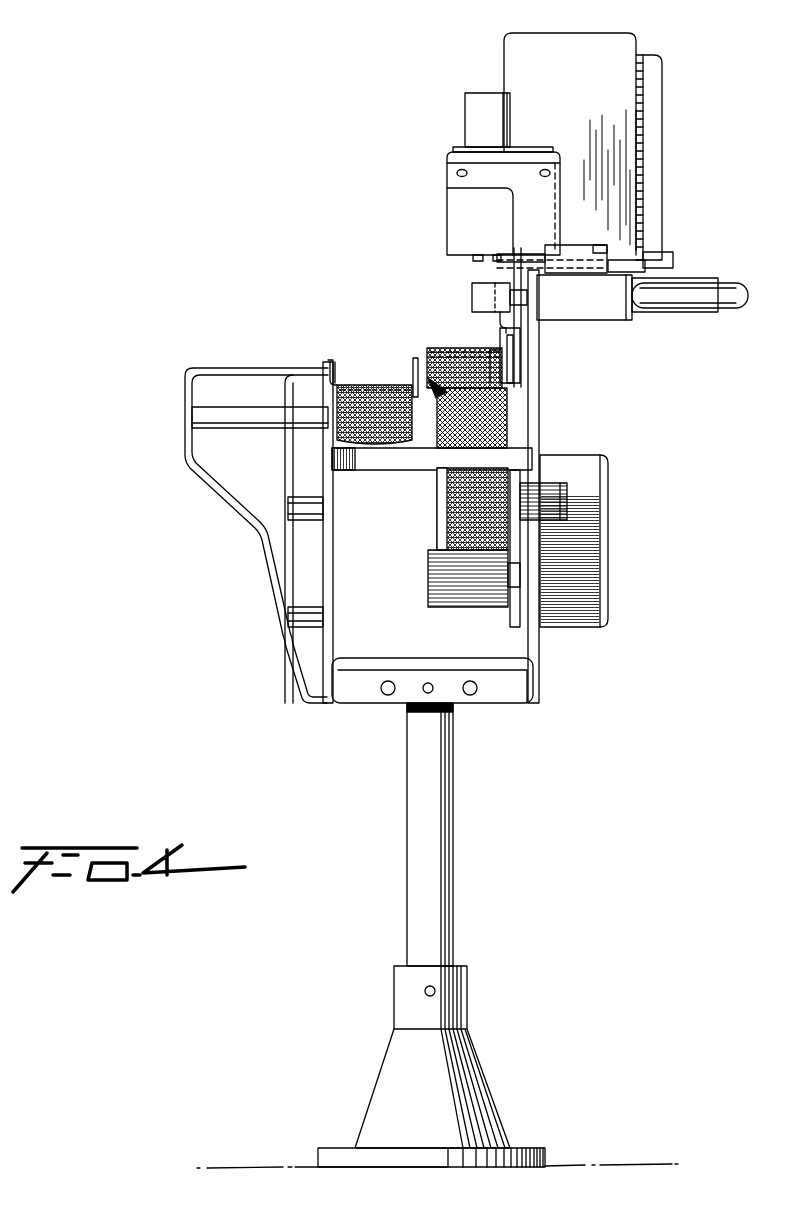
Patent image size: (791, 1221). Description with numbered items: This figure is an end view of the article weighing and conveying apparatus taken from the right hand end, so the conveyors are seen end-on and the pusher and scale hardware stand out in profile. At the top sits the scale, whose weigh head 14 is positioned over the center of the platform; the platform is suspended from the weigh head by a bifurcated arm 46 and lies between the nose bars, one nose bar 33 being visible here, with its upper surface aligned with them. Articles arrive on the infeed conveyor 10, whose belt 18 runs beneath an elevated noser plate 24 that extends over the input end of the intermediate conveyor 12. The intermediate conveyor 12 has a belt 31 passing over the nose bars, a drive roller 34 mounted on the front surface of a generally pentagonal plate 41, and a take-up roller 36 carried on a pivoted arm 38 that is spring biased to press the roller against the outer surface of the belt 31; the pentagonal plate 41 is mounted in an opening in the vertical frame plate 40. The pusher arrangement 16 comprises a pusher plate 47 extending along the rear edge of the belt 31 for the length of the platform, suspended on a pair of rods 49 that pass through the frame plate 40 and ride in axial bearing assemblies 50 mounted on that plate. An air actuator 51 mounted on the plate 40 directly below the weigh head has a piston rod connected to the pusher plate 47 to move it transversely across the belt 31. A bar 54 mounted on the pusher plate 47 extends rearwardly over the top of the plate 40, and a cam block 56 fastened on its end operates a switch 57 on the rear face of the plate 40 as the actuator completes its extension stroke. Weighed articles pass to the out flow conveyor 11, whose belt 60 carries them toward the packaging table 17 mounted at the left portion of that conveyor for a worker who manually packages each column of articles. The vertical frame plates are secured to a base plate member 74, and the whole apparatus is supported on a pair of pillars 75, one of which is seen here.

The infeed conveyor 10 is at (450, 346).
The out flow conveyor 11 is at (368, 380).
The intermediate conveyor 12 is at (417, 367).
The weigh head 14 is at (468, 111).
The pusher arrangement 16 is at (478, 281).
The packaging table 17 is at (188, 370).
The belt 18 is at (473, 350).
The noser plate 24 is at (425, 352).
The belt 31 is at (460, 470).
The nose bar 33 is at (522, 398).
The drive roller 34 is at (437, 523).
The take-up roller 36 is at (432, 594).
The pivoted arm 38 is at (527, 542).
The vertical frame plate 40 is at (537, 382).
The pentagonal plate 41 is at (520, 597).
The bifurcated arm 46 is at (530, 338).
The pusher plate 47 is at (480, 298).
The rods 49 is at (527, 298).
The axial bearing assemblies 50 is at (615, 303).
The air actuator 51 is at (703, 280).
The bar 54 is at (623, 262).
The cam block 56 is at (663, 253).
The switch 57 is at (580, 247).
The belt 60 is at (345, 420).
The base plate member 74 is at (528, 680).
The pillars 75 is at (453, 855).